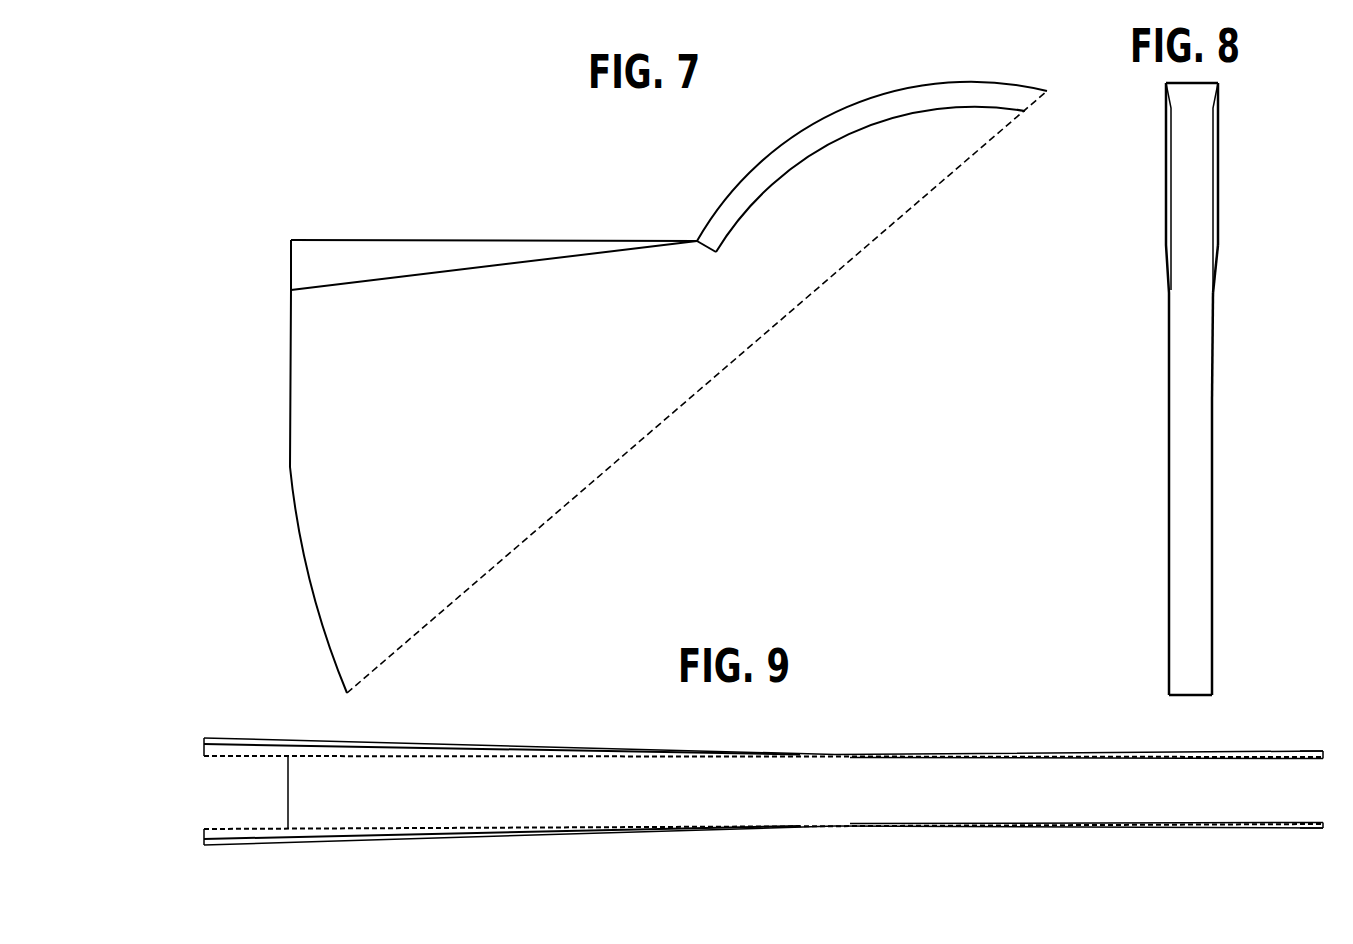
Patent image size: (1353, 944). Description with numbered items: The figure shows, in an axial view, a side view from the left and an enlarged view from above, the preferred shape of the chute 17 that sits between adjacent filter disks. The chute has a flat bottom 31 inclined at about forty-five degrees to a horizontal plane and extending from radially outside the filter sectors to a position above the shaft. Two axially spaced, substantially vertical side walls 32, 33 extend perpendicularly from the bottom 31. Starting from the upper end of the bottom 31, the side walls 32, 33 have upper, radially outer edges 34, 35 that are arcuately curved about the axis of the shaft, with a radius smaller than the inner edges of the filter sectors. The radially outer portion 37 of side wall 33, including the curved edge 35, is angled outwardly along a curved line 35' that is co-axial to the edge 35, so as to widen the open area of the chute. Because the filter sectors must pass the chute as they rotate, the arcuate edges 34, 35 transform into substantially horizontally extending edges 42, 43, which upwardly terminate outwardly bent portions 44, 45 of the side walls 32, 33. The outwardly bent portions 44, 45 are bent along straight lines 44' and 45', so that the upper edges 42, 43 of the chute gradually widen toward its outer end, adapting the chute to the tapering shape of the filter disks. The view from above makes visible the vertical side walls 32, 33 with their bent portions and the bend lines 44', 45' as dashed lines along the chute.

In FIG. 7, the chute 17 is at (290, 460).
In FIG. 7, the flat bottom 31 is at (615, 480).
In FIG. 8, the flat bottom 31 is at (1197, 694).
In FIG. 9, the flat bottom 31 is at (763, 791).
In FIG. 8, the side wall 32 is at (1169, 516).
In FIG. 9, the side wall 32 is at (793, 757).
In FIG. 7, the side wall 33 is at (469, 414).
In FIG. 8, the side wall 33 is at (1212, 515).
In FIG. 9, the side wall 33 is at (802, 824).
In FIG. 8, the upper radially outer edge 34 is at (1166, 163).
In FIG. 9, the upper radially outer edge 34 is at (1270, 751).
In FIG. 7, the upper radially outer edge 35 is at (872, 139).
In FIG. 8, the upper radially outer edge 35 is at (1252, 164).
In FIG. 9, the upper radially outer edge 35 is at (1293, 852).
In FIG. 7, the curved line 35' is at (870, 179).
In FIG. 7, the radially outer portion 37 is at (872, 144).
In FIG. 8, the substantially horizontally extending edge 42 is at (1166, 245).
In FIG. 9, the substantially horizontally extending edge 42 is at (422, 739).
In FIG. 7, the substantially horizontally extending edge 43 is at (547, 240).
In FIG. 8, the substantially horizontally extending edge 43 is at (1219, 243).
In FIG. 9, the substantially horizontally extending edge 43 is at (368, 844).
In FIG. 8, the outwardly bent portion 44 is at (1137, 276).
In FIG. 9, the outwardly bent portion 44 is at (502, 717).
In FIG. 8, the straight line 44' is at (1131, 346).
In FIG. 9, the straight line 44' is at (763, 778).
In FIG. 7, the outwardly bent portion 45 is at (334, 299).
In FIG. 8, the outwardly bent portion 45 is at (1255, 275).
In FIG. 9, the outwardly bent portion 45 is at (502, 864).
In FIG. 7, the straight line 45' is at (494, 277).
In FIG. 8, the straight line 45' is at (1247, 346).
In FIG. 9, the straight line 45' is at (763, 812).